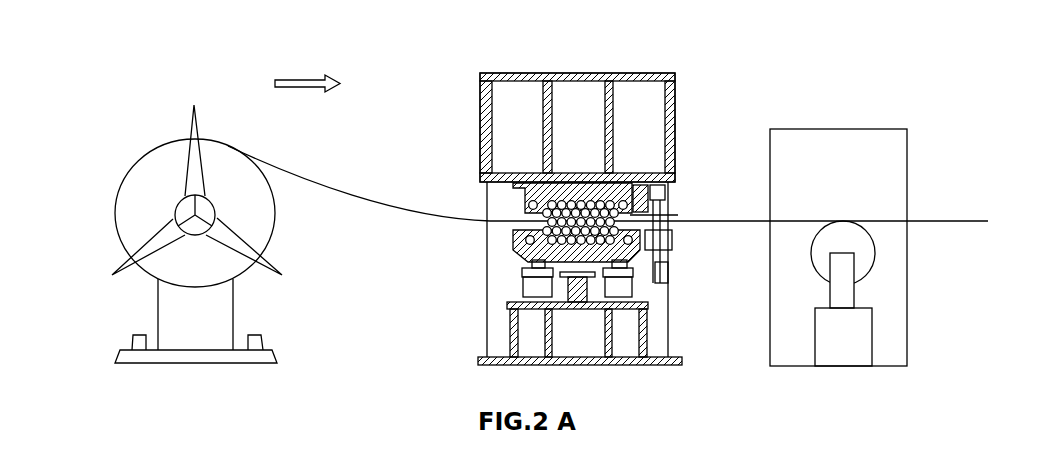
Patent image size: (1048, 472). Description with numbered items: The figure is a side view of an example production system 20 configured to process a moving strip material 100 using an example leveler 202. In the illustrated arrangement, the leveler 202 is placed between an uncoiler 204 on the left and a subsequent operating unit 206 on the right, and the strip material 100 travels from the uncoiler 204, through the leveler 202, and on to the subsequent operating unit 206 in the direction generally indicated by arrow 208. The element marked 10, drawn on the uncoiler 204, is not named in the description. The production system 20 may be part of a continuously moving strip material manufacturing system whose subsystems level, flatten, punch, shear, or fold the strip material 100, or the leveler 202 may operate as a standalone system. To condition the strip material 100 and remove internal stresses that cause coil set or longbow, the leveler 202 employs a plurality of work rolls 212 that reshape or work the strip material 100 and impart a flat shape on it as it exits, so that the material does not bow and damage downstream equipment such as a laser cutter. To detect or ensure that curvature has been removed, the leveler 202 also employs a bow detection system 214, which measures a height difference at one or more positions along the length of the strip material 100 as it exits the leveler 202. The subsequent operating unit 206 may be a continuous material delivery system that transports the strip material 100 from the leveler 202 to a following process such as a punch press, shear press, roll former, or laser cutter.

The production system 20 is at (107, 45).
The uncoiler 204 is at (155, 118).
The roll of web material 10 is at (275, 215).
The arrow 208 is at (305, 78).
The strip material 100 is at (380, 203).
The leveler 202 is at (602, 52).
The work rolls 212 is at (508, 230).
The bow detection system 214 is at (683, 200).
The subsequent operating unit 206 is at (867, 110).